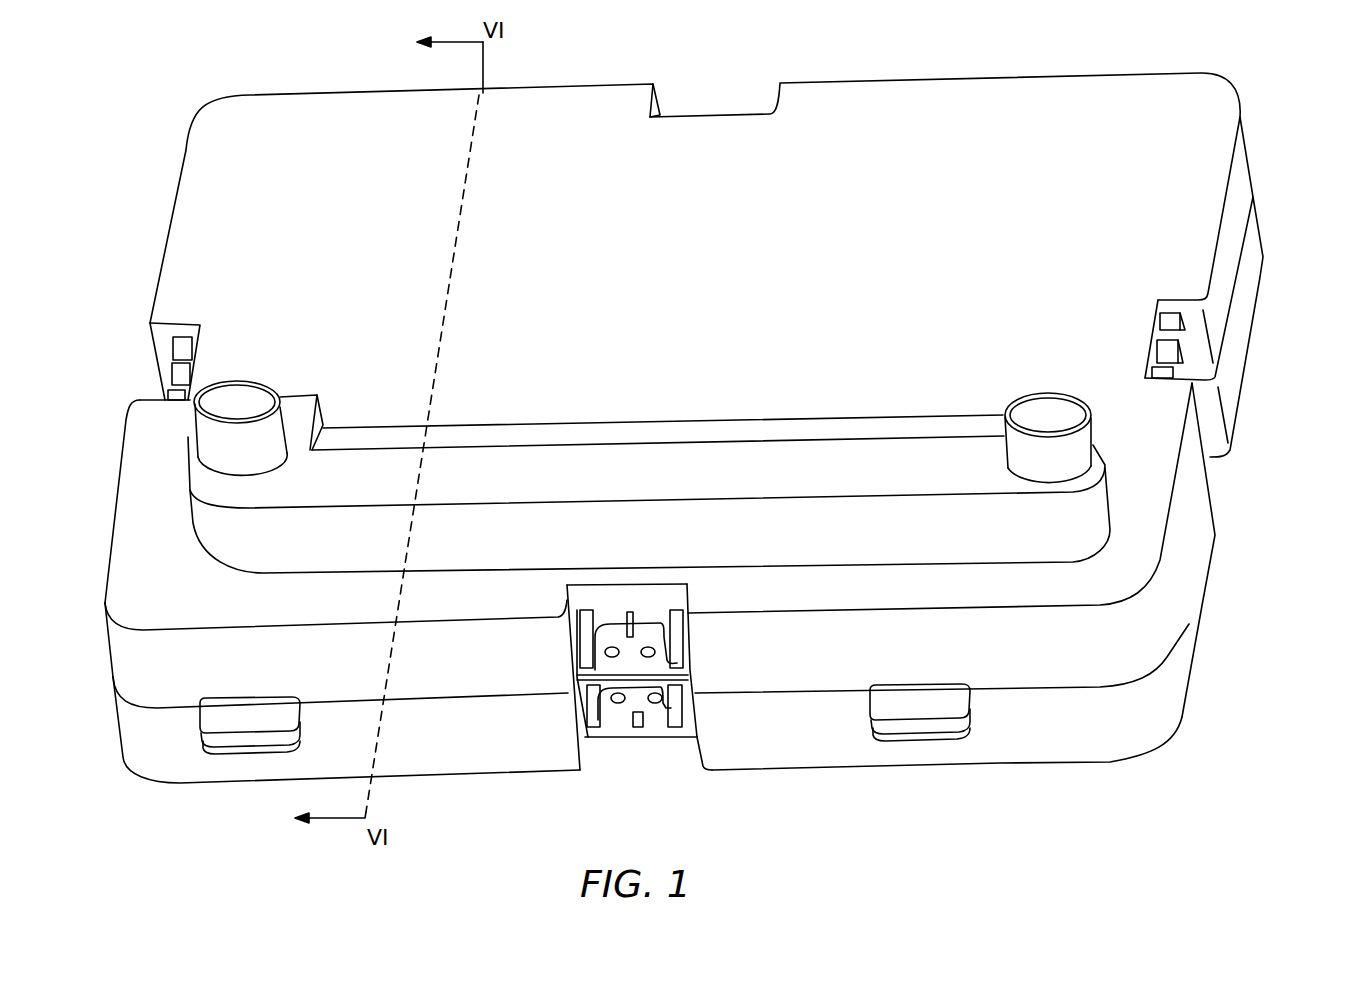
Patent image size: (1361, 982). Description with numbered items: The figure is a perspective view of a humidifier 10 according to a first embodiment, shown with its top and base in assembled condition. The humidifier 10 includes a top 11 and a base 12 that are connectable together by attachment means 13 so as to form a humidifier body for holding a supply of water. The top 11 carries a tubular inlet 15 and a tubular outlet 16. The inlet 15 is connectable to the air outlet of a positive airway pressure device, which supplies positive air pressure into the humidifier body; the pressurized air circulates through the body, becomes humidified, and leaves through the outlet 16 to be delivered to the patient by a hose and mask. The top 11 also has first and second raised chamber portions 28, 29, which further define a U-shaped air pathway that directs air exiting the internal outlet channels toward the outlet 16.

The humidifier 10 is at (1276, 136).
The top 11 is at (1160, 610).
The base 12 is at (1170, 703).
The attachment means 13 is at (657, 667).
The tubular inlet 15 is at (263, 382).
The tubular outlet 16 is at (1067, 395).
The first raised chamber portion 28 is at (653, 432).
The second raised chamber portion 29 is at (773, 472).